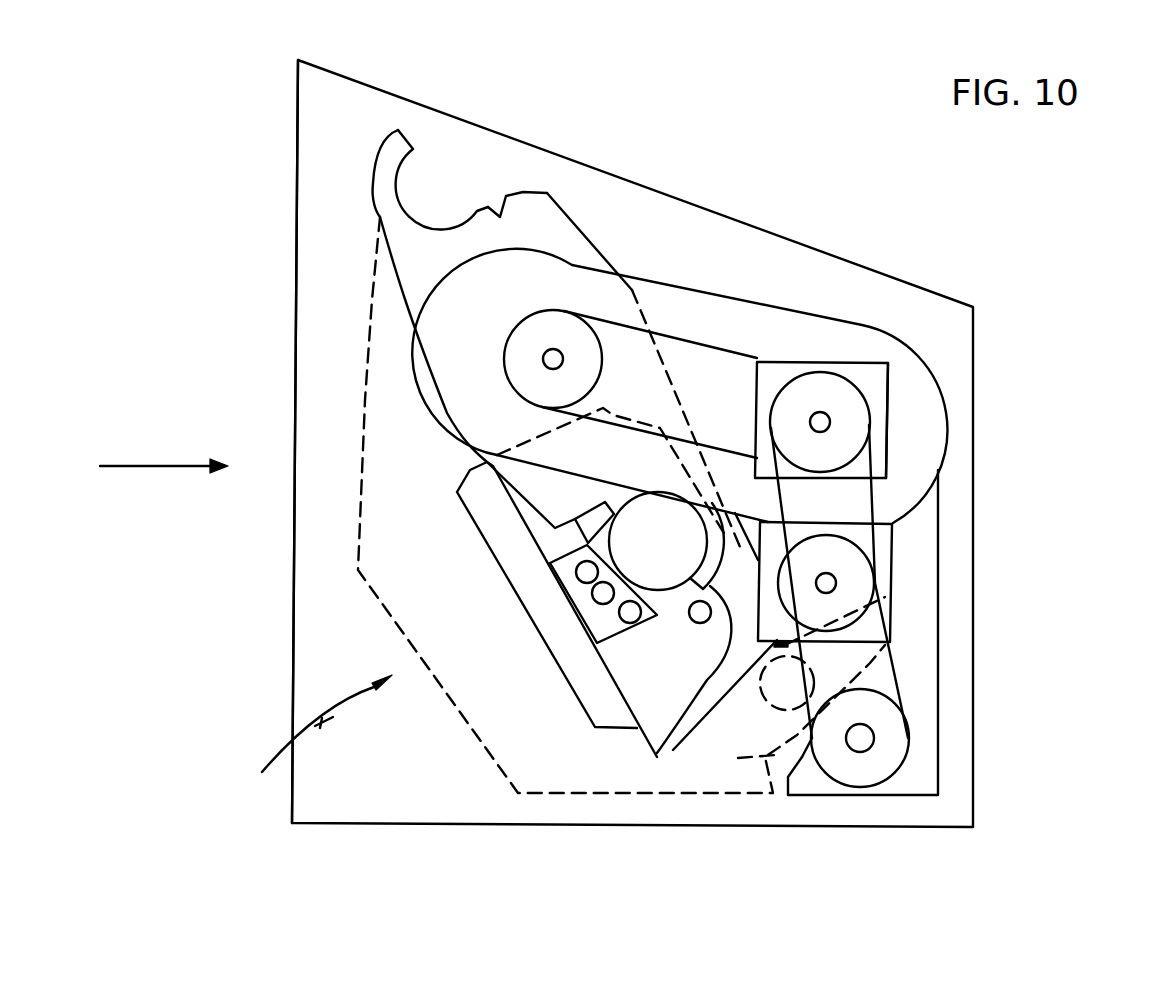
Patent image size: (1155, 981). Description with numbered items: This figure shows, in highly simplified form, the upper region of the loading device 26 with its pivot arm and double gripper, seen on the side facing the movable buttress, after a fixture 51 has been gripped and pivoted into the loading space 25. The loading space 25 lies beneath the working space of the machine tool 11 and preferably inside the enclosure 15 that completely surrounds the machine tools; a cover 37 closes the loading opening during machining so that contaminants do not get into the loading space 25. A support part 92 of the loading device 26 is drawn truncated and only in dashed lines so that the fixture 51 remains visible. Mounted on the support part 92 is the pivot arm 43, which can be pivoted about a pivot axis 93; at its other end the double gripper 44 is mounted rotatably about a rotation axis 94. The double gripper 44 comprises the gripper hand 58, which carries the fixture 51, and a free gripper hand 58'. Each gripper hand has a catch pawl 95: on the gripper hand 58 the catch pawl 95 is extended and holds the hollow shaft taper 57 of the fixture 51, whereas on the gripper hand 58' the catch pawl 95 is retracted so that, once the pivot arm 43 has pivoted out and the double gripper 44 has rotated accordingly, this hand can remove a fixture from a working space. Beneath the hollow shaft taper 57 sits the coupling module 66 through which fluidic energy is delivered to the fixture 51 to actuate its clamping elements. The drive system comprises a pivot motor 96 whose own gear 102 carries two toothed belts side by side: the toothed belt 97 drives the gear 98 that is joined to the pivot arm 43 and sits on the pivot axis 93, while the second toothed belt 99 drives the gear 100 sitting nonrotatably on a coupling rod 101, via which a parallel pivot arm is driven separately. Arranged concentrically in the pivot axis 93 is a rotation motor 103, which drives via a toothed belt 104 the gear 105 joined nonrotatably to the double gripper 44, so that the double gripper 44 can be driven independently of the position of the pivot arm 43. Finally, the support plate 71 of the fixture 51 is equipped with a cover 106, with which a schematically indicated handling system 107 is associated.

The machine tool 11 is at (132, 459).
The enclosure 15 is at (297, 632).
The loading space 25 is at (325, 546).
The loading device 26 is at (306, 735).
The cover 37 is at (868, 272).
The pivot arm 43 is at (722, 313).
The double gripper 44 is at (537, 233).
The fixture 51 is at (660, 760).
The hollow shaft taper 57 is at (658, 562).
The gripper hand 58 is at (656, 685).
The free gripper hand 58' is at (418, 125).
The coupling module 66 is at (595, 620).
The support plate 71 is at (712, 760).
The support part 92 is at (380, 467).
The pivot axis 93 is at (833, 420).
The rotation axis 94 is at (557, 357).
The catch pawl 95 is at (513, 187).
The pivot motor 96 is at (895, 524).
The toothed belt 97 is at (942, 468).
The gear 98 is at (830, 390).
The second toothed belt 99 is at (897, 663).
The gear 100 is at (888, 722).
The coupling rod 101 is at (865, 742).
The gear 102 is at (858, 572).
The rotation motor 103 is at (875, 383).
The toothed belt 104 is at (742, 355).
The gear 105 is at (530, 340).
The cover 106 is at (758, 735).
The handling system 107 is at (812, 738).